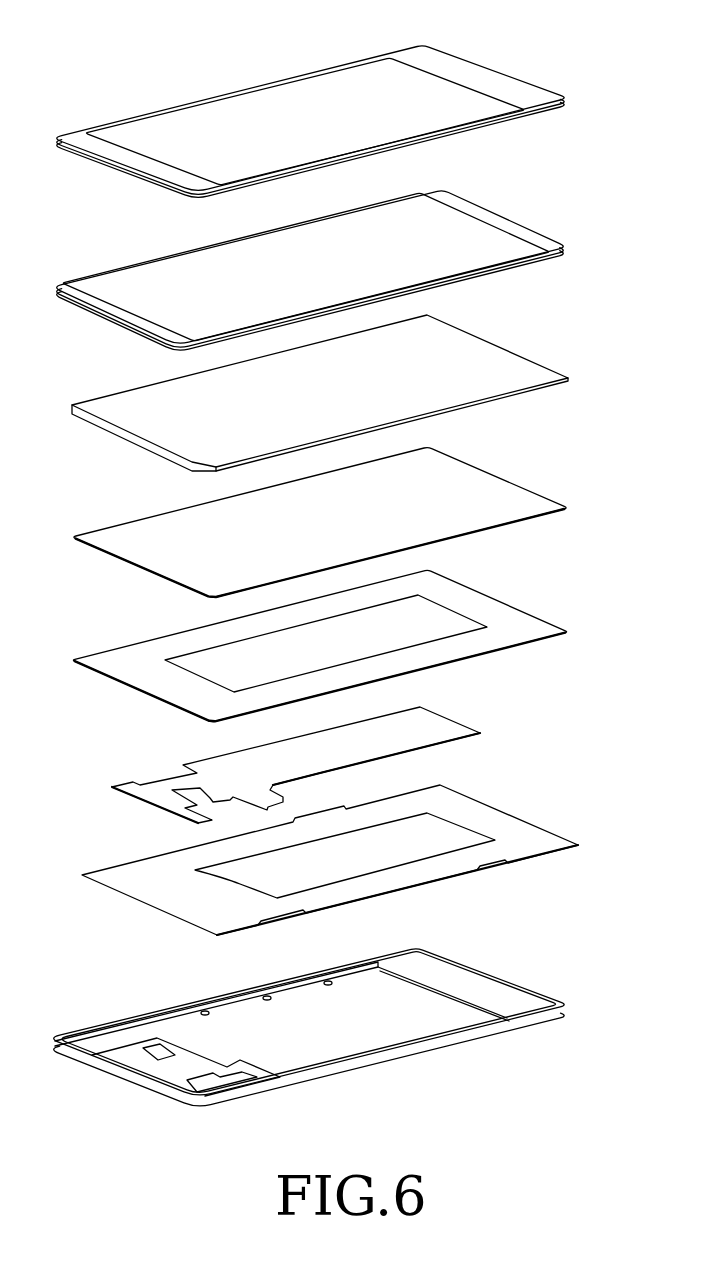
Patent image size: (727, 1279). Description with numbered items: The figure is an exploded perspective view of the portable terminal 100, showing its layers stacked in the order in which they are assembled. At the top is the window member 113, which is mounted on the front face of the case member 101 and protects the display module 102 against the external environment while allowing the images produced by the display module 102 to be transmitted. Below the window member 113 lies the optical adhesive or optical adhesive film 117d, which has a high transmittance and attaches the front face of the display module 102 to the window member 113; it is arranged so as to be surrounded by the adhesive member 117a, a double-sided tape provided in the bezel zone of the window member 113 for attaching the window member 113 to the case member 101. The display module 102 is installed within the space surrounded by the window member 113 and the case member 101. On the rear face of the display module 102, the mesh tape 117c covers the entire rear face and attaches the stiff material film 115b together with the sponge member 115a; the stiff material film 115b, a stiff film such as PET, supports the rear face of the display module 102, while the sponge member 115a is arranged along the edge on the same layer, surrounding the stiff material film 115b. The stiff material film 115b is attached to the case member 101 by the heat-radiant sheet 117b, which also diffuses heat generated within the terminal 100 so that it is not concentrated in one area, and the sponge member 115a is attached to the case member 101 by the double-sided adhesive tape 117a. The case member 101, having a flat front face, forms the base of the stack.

The portable terminal 100 is at (235, 40).
The window member 113 is at (510, 85).
The optical adhesive film 117d is at (452, 227).
The adhesive member 117a is at (538, 233).
The display module 102 is at (545, 363).
The mesh tape 117c is at (518, 490).
The stiff material film 115b is at (453, 622).
The sponge member 115a is at (537, 625).
The heat-radiant sheet 117b is at (443, 727).
The case member 101 is at (525, 980).